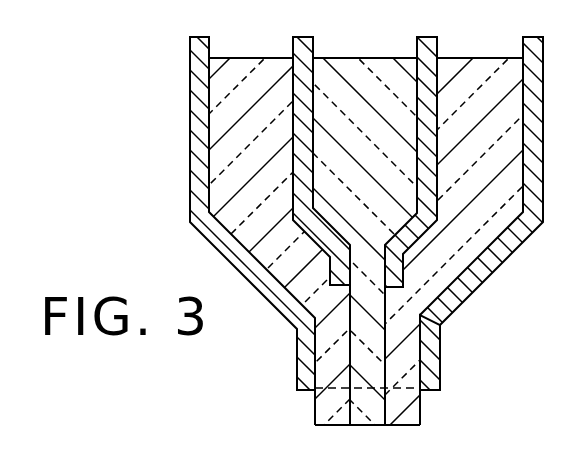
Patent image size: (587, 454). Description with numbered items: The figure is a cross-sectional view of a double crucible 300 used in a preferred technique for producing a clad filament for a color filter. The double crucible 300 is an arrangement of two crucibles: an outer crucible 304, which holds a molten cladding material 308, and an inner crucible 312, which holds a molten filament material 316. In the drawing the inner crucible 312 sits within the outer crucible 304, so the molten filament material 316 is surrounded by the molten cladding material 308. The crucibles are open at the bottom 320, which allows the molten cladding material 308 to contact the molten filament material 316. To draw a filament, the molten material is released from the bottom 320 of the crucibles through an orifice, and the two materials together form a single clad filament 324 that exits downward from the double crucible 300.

The double crucible 300 is at (160, 77).
The outer crucible 304 is at (195, 190).
The molten cladding material 308 is at (273, 78).
The inner crucible 312 is at (462, 85).
The molten filament material 316 is at (365, 80).
The bottom 320 is at (340, 388).
The clad filament 324 is at (423, 417).